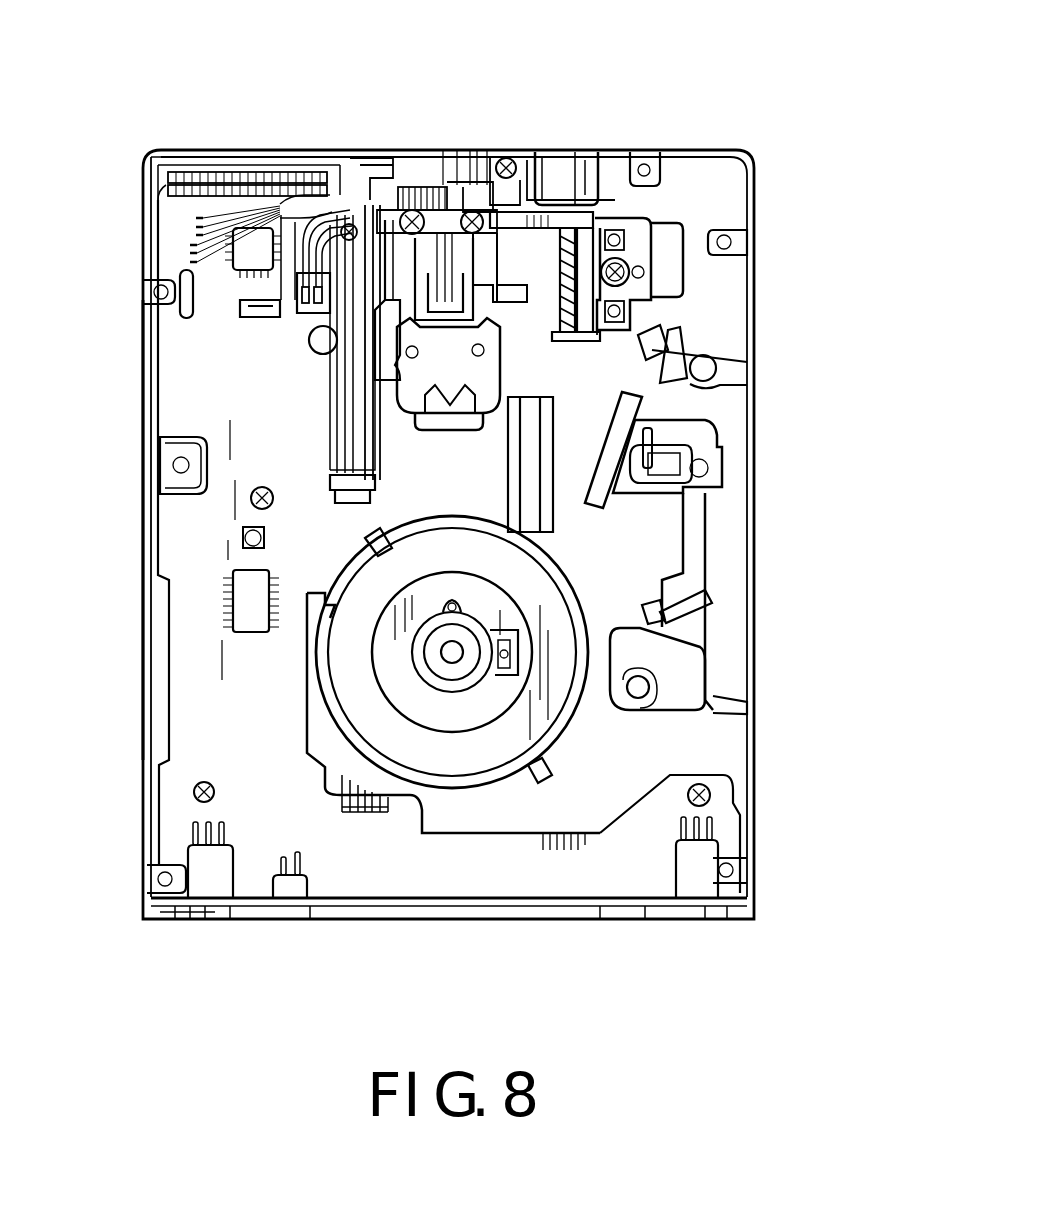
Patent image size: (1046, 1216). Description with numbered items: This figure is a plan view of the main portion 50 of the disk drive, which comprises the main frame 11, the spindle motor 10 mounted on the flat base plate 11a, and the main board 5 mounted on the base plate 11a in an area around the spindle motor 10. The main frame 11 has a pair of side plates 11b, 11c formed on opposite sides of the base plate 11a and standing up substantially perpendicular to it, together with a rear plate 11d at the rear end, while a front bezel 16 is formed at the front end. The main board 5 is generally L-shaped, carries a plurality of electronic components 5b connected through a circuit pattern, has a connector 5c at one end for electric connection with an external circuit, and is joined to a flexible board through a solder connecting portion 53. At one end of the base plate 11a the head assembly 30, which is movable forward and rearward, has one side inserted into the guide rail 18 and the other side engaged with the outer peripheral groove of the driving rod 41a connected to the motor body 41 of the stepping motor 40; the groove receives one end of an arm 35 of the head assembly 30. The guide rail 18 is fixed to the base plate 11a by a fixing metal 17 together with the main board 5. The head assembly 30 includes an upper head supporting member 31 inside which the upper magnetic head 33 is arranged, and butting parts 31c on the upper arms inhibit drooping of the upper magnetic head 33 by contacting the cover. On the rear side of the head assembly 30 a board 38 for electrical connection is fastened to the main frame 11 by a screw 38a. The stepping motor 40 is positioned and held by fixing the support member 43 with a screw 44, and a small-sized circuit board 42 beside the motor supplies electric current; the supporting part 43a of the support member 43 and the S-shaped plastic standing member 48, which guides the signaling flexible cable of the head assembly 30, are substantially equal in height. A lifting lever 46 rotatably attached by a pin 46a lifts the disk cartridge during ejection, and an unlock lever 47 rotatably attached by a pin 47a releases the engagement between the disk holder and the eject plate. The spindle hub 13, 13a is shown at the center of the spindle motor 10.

The main board 5 is at (158, 535).
The electronic components 5b is at (148, 306).
The connector 5c is at (215, 165).
The spindle motor 10 is at (580, 590).
The main frame 11 is at (757, 530).
The base plate 11a is at (705, 740).
The side plate 11b is at (747, 805).
The side plate 11c is at (151, 735).
The rear plate 11d is at (700, 152).
The spindle motor 13 is at (433, 523).
The spindle hub 13a is at (455, 650).
The front bezel 16 is at (470, 920).
The fixing metal 17 is at (330, 160).
The guide rail 18 is at (395, 150).
The head assembly 30 is at (440, 150).
The upper head supporting member 31 is at (465, 380).
The butting part 31c is at (490, 150).
The upper magnetic head 33 is at (455, 430).
The arm 35 is at (508, 225).
The board for electrical connection 38 is at (440, 178).
The screw 38a is at (498, 180).
The stepping motor 40 is at (575, 148).
The motor body 41 is at (595, 212).
The driving rod 41a is at (570, 305).
The small-sized circuit board 42 is at (520, 155).
The support member 43 is at (665, 228).
The supporting part 43a is at (590, 330).
The screw 44 is at (640, 268).
The lifting lever 46 is at (690, 678).
The pin 46a is at (655, 680).
The unlock lever 47 is at (725, 365).
The pin 47a is at (715, 355).
The standing member 48 is at (290, 150).
The main portion 50 is at (598, 150).
The solder connecting portion 53 is at (345, 820).